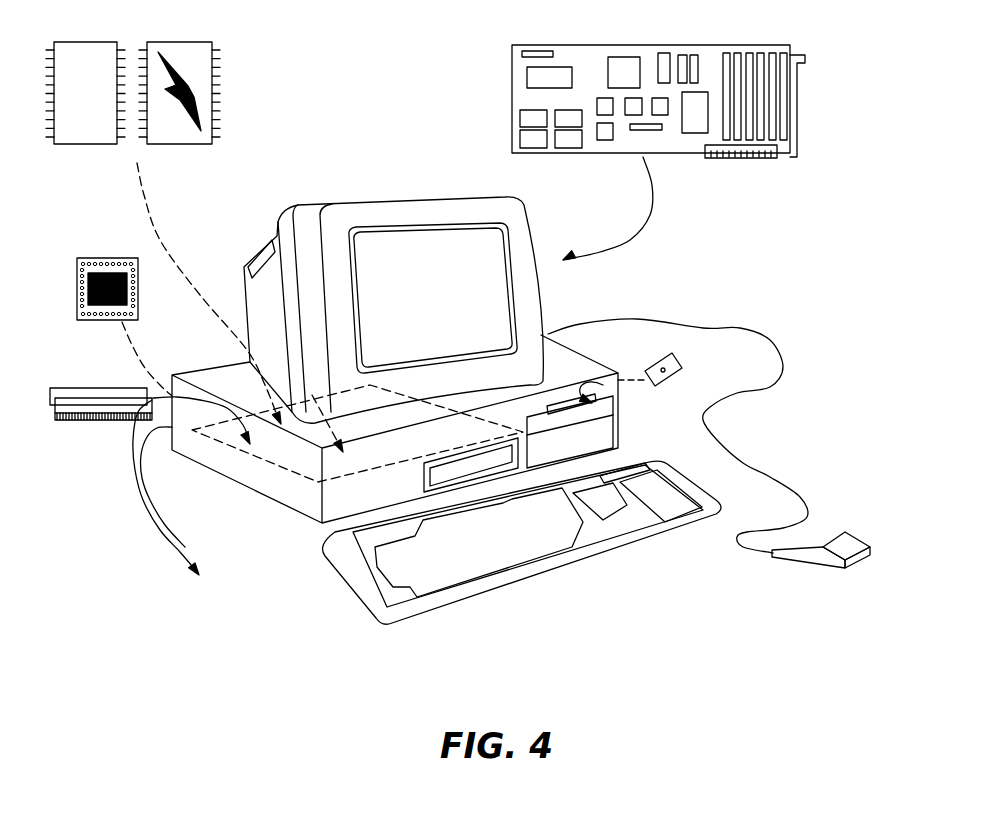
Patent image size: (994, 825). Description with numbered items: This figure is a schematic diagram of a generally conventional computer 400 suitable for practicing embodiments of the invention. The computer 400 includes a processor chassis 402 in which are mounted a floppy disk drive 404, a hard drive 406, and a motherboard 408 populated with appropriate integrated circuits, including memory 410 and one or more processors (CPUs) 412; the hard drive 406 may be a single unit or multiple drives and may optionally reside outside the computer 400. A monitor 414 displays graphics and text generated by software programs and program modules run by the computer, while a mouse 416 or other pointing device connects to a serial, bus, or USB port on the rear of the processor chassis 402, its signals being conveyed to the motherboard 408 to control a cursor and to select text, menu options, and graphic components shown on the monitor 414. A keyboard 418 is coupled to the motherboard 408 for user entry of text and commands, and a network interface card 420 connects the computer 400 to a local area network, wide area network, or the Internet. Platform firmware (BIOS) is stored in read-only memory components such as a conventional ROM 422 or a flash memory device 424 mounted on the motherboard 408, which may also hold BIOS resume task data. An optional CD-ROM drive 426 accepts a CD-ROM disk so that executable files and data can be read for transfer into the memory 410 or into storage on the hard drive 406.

The computer 400 is at (535, 597).
The processor chassis 402 is at (603, 404).
The floppy disk drive 404 is at (620, 373).
The hard drive 406 is at (590, 436).
The motherboard 408 is at (267, 462).
The memory 410 is at (75, 396).
The processor 412 is at (138, 303).
The monitor 414 is at (530, 258).
The mouse 416 is at (852, 568).
The keyboard 418 is at (613, 557).
The network interface card 420 is at (790, 92).
The ROM 422 is at (85, 135).
The flash memory device 424 is at (183, 137).
The CD-ROM drive 426 is at (424, 478).